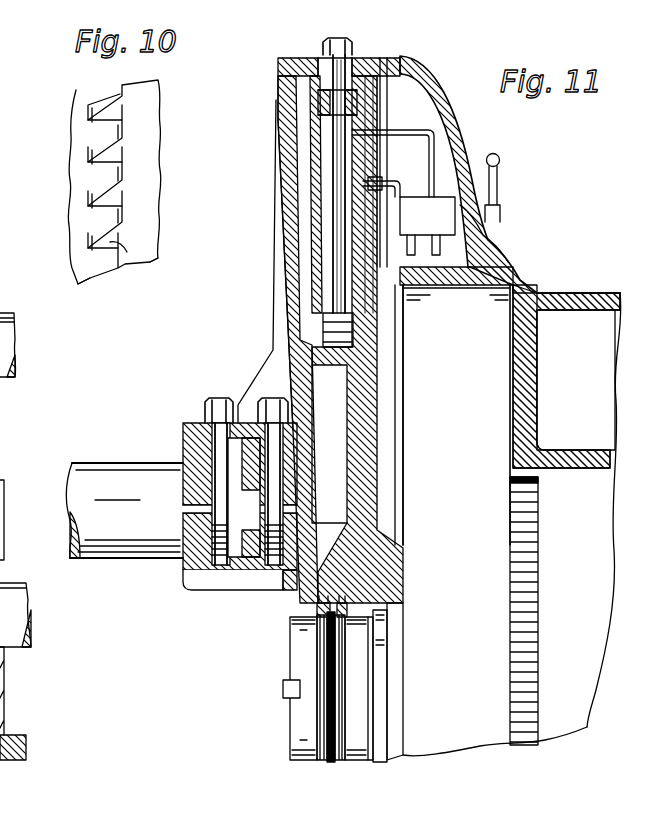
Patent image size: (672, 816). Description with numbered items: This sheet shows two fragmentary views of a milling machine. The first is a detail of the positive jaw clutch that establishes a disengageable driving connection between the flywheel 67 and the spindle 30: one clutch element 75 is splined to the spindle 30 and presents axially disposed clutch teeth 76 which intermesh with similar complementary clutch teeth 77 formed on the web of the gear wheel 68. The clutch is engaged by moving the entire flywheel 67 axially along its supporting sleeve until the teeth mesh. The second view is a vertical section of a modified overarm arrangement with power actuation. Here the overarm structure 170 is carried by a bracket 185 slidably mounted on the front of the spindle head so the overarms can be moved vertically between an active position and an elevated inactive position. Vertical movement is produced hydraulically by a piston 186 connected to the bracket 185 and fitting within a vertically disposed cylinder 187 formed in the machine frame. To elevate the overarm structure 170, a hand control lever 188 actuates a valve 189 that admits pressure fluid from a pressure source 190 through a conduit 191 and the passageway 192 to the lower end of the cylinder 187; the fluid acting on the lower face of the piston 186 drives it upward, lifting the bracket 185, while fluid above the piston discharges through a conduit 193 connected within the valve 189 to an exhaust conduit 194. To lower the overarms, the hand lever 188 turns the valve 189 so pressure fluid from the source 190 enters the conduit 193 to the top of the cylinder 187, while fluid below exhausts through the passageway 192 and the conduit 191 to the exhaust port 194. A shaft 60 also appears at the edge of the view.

In FIG. 11, the spindle 30 is at (293, 637).
In FIG. 11, the shaft 60 is at (12, 590).
In FIG. 11, the flywheel 67 is at (490, 420).
In FIG. 10, the gear wheel 68 is at (75, 220).
In FIG. 11, the gear wheel 68 is at (530, 545).
In FIG. 10, the clutch element 75 is at (150, 246).
In FIG. 10, the clutch teeth 76 is at (128, 248).
In FIG. 10, the clutch teeth 77 is at (100, 266).
In FIG. 11, the overarm structure 170 is at (118, 470).
In FIG. 11, the bracket 185 is at (297, 300).
In FIG. 11, the hydraulic piston 186 is at (333, 352).
In FIG. 11, the cylinder 187 is at (325, 165).
In FIG. 11, the hand control lever 188 is at (497, 175).
In FIG. 11, the valve 189 is at (455, 232).
In FIG. 11, the pressure source 190 is at (443, 243).
In FIG. 11, the conduit 191 is at (400, 188).
In FIG. 11, the passageway 192 is at (363, 262).
In FIG. 11, the conduit 193 is at (396, 131).
In FIG. 11, the exhaust conduit 194 is at (430, 237).